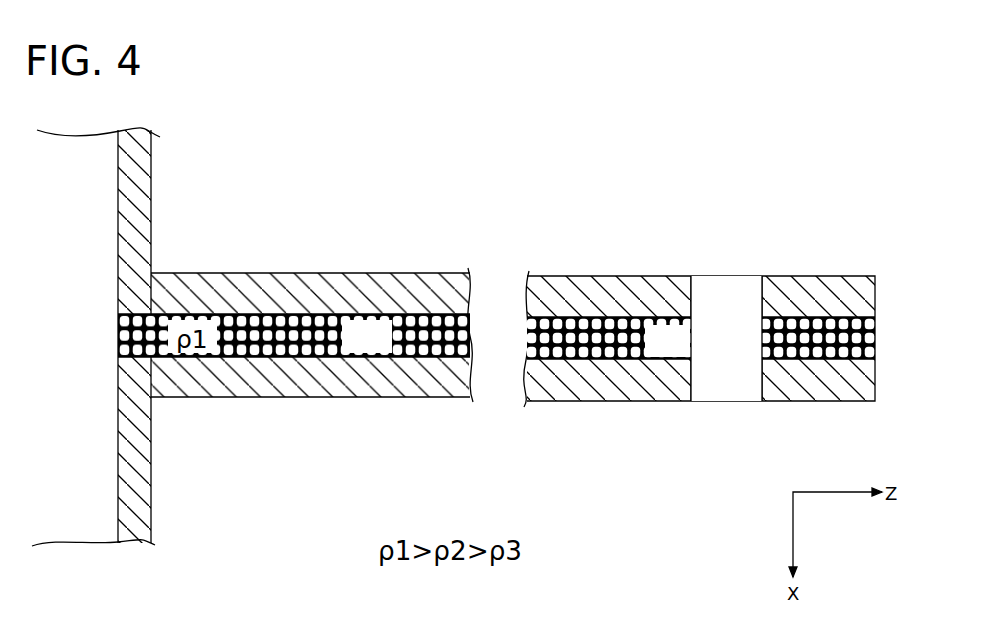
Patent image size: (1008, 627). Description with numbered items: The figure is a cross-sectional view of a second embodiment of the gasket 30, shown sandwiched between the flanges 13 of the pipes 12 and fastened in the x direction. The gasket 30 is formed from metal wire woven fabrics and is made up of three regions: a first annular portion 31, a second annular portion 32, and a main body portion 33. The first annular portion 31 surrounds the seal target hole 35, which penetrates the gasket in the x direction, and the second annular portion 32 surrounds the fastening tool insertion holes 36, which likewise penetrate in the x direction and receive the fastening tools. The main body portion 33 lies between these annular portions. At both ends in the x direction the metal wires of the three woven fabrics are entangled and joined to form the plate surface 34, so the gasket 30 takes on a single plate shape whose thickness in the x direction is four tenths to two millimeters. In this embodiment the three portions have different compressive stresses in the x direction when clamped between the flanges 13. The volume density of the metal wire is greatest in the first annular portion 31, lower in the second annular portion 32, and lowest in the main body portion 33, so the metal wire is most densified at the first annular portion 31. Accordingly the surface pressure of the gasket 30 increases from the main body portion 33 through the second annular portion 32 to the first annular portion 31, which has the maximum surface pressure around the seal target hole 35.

The pipe 12 is at (152, 182).
The flange 13 is at (298, 273).
The gasket 30 is at (423, 302).
The first annular portion 31 is at (191, 314).
The second annular portion 32 is at (797, 317).
The main body portion 33 is at (382, 313).
The plate surface 34 is at (571, 317).
The seal target hole 35 is at (118, 336).
The fastening tool insertion hole 36 is at (762, 341).